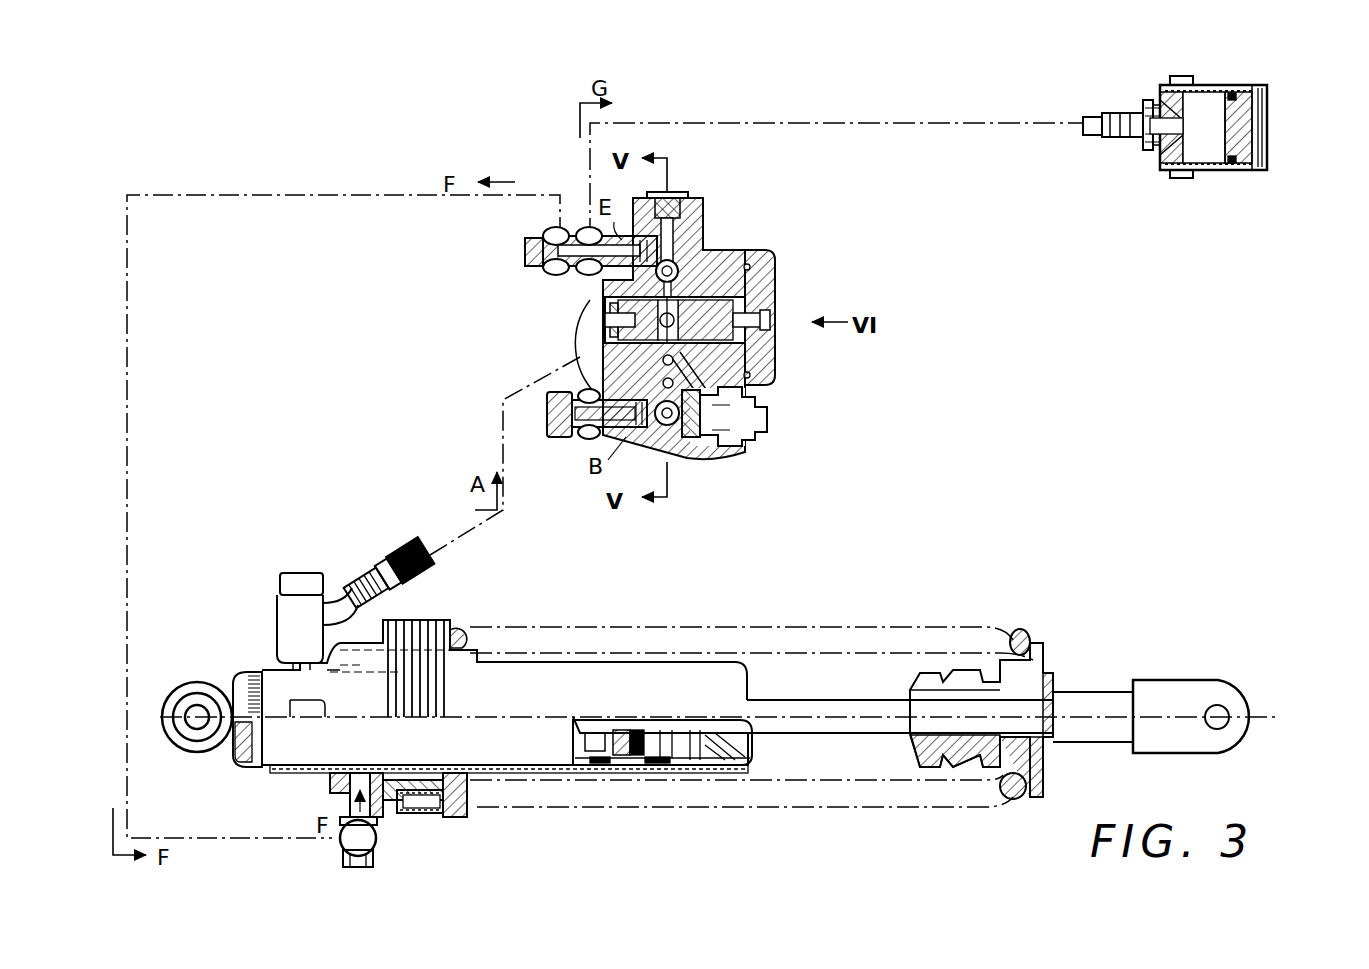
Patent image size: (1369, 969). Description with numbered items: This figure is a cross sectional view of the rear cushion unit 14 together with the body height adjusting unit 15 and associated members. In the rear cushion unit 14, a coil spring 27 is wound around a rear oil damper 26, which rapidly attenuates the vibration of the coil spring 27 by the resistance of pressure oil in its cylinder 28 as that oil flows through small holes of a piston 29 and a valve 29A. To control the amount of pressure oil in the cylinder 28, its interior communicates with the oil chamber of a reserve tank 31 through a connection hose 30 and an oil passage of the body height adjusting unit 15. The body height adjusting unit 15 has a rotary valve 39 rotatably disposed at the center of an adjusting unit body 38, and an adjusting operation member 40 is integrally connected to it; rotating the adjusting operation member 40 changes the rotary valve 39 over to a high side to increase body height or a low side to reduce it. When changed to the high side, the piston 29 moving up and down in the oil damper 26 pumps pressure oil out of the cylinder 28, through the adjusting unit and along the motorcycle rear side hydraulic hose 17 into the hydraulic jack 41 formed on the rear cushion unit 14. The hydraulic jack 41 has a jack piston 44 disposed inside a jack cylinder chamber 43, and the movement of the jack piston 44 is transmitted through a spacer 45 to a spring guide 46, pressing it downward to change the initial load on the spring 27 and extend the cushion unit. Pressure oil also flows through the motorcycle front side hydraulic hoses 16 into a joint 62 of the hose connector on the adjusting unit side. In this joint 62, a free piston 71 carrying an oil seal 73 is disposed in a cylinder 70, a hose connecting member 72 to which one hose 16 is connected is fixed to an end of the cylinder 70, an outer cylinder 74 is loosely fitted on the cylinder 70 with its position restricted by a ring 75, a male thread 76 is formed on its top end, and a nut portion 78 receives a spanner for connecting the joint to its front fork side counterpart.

The rear cushion unit 14 is at (1078, 654).
The body height adjusting unit 15 is at (690, 325).
The motorcycle front side hydraulic hoses 16 is at (885, 123).
The motorcycle rear side hydraulic hose 17 is at (129, 420).
The rear oil damper 26 is at (707, 668).
The coil spring 27 is at (760, 808).
The cylinder 28 is at (292, 775).
The piston 29 is at (630, 742).
The valve 29A is at (642, 772).
The connection hose 30 is at (503, 428).
The reserve tank 31 is at (578, 333).
The adjusting unit body 38 is at (722, 262).
The rotary valve 39 is at (610, 303).
The adjusting operation member 40 is at (766, 288).
The hydraulic jack 41 is at (428, 818).
The jack cylinder chamber 43 is at (380, 815).
The jack piston 44 is at (376, 772).
The spacer 45 is at (431, 772).
The spring guide 46 is at (468, 797).
The joint 62 is at (1211, 129).
The cylinder 70 is at (1262, 170).
The free piston 71 is at (1245, 120).
The hose connecting member 72 is at (1168, 150).
The oil seal 73 is at (1242, 175).
The outer cylinder 74 is at (1205, 175).
The ring 75 is at (1250, 85).
The male thread 76 is at (1206, 80).
The nut portion 78 is at (1178, 177).